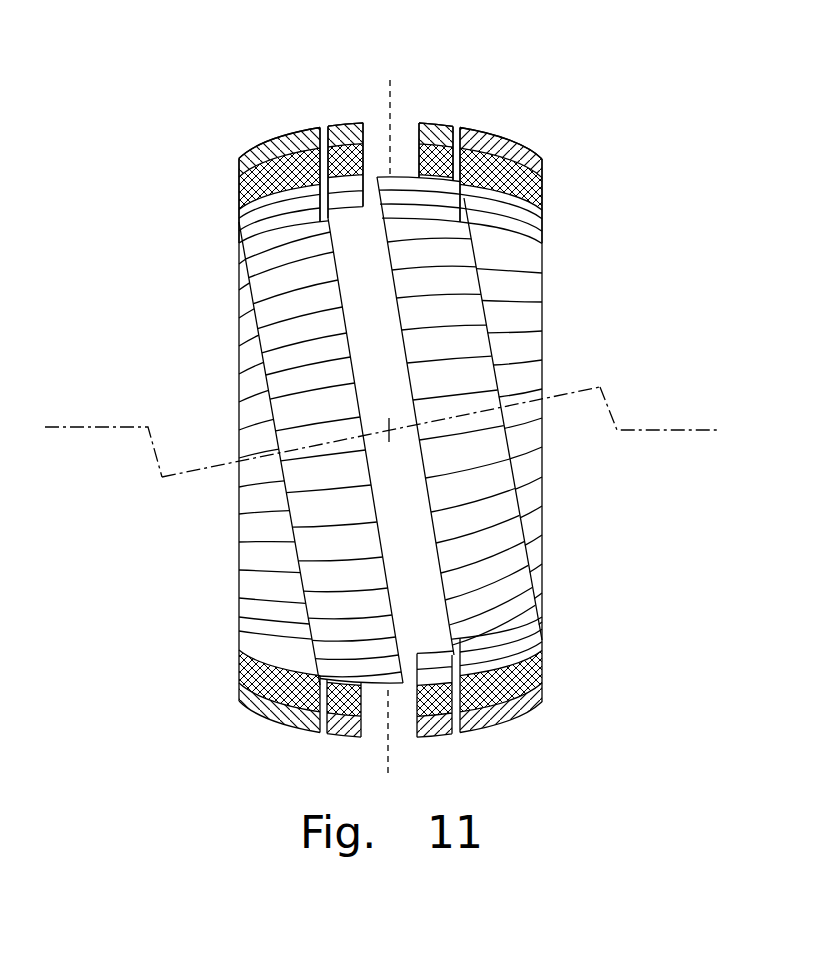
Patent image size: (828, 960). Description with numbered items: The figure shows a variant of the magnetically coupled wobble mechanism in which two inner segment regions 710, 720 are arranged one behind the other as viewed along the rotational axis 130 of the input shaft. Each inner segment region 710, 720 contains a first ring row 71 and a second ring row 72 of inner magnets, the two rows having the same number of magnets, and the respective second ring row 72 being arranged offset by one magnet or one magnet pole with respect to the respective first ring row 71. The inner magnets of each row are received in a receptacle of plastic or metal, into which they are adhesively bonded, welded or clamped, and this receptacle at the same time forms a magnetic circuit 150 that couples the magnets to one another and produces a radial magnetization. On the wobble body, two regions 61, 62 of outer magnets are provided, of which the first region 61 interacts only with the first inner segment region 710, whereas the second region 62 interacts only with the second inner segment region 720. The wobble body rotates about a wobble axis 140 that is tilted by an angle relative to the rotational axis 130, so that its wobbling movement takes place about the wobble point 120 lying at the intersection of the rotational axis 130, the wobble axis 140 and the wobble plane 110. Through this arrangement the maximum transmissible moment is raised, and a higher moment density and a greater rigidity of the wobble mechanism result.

The first region 61 is at (273, 313).
The second region 62 is at (460, 287).
The first ring row 71 is at (262, 146).
The second ring row 72 is at (348, 124).
The wobble plane 110 is at (391, 80).
The wobble point 120 is at (388, 430).
The rotational axis 130 is at (630, 428).
The wobble axis 140 is at (184, 470).
The magnetic circuit 150 is at (247, 164).
The first inner segment region 710 is at (277, 95).
The second inner segment region 720 is at (514, 102).